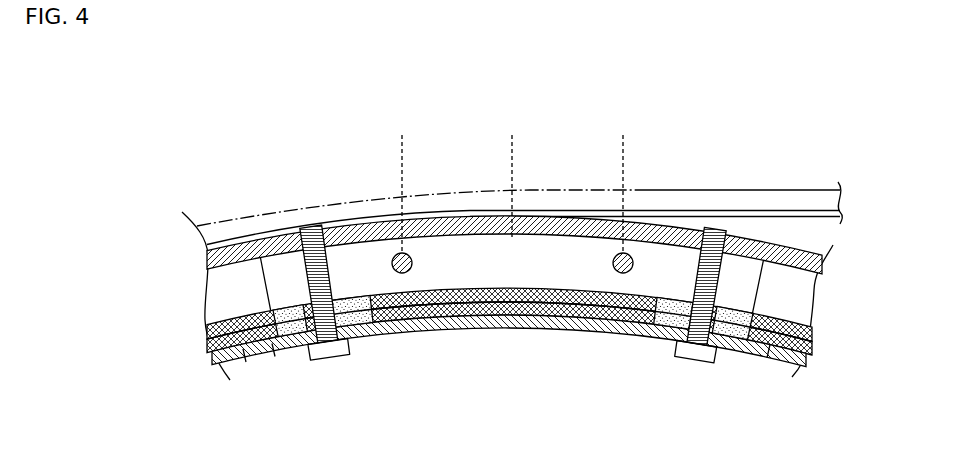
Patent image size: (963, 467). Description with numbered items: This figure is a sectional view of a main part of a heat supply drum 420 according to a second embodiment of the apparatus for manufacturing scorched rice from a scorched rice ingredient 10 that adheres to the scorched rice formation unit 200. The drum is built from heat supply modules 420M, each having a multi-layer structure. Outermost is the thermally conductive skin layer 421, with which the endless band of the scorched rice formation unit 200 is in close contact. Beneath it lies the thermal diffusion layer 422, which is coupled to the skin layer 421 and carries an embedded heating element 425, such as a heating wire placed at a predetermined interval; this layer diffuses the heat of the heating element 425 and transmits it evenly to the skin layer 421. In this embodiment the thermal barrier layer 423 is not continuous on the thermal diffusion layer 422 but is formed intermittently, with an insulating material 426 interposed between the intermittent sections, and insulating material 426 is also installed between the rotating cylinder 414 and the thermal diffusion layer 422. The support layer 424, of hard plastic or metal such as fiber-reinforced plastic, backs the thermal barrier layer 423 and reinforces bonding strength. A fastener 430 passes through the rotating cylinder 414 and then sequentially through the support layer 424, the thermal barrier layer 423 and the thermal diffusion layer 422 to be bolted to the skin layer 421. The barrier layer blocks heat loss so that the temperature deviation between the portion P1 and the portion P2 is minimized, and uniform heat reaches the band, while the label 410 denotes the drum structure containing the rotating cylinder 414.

The scorched rice ingredient 10 is at (455, 195).
The scorched rice formation unit 200 is at (560, 231).
The heat supply drum 420 is at (512, 276).
The heat supply module 420M is at (204, 292).
The skin layer 421 is at (357, 226).
The thermal diffusion layer 422 is at (553, 250).
The thermal barrier layer 423 is at (293, 341).
The support layer 424 is at (360, 333).
The heating element 425 is at (403, 274).
The insulating material 426 is at (470, 326).
The rotating cylinder 414 is at (509, 358).
The support member 410 is at (521, 329).
The fastener 430 is at (330, 361).
The portion P1 is at (512, 181).
The portion P2 is at (512, 174).